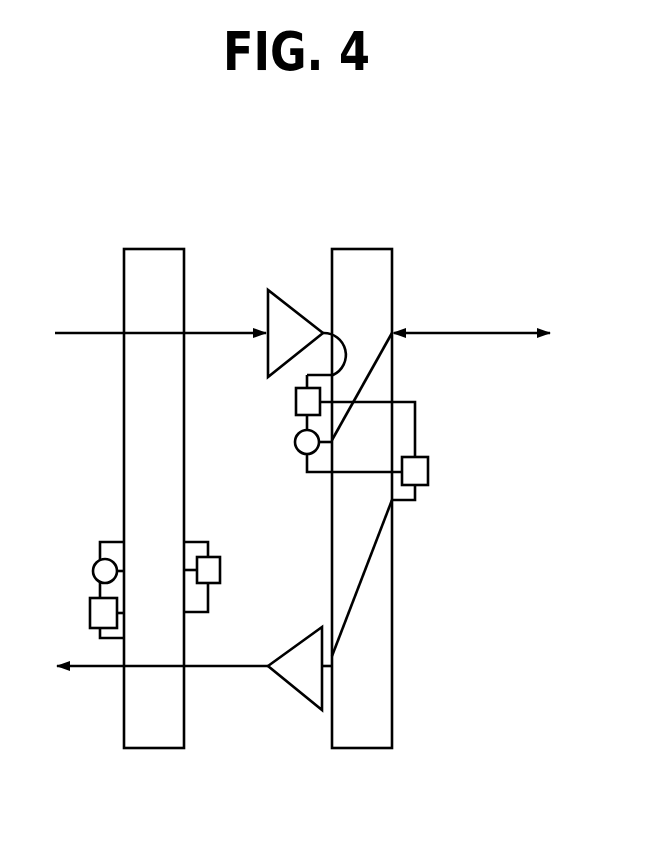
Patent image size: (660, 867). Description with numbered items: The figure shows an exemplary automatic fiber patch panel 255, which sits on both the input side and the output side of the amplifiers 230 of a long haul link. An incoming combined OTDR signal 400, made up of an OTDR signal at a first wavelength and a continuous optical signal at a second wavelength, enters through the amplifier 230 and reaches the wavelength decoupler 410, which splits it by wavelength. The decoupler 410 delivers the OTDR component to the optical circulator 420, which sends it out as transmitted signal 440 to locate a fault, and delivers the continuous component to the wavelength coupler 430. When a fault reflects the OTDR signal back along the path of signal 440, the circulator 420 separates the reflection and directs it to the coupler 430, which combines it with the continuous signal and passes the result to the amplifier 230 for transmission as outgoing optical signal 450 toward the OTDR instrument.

The automatic fiber patch panel 255 is at (123, 263).
The amplifier 230 is at (284, 297).
The combined OTDR signal 400 is at (87, 331).
The wavelength decoupler 410 is at (295, 404).
The optical circulator 420 is at (295, 448).
The wavelength coupler 430 is at (428, 468).
The transmitted signal 440 is at (474, 333).
The outgoing optical signal 450 is at (87, 670).